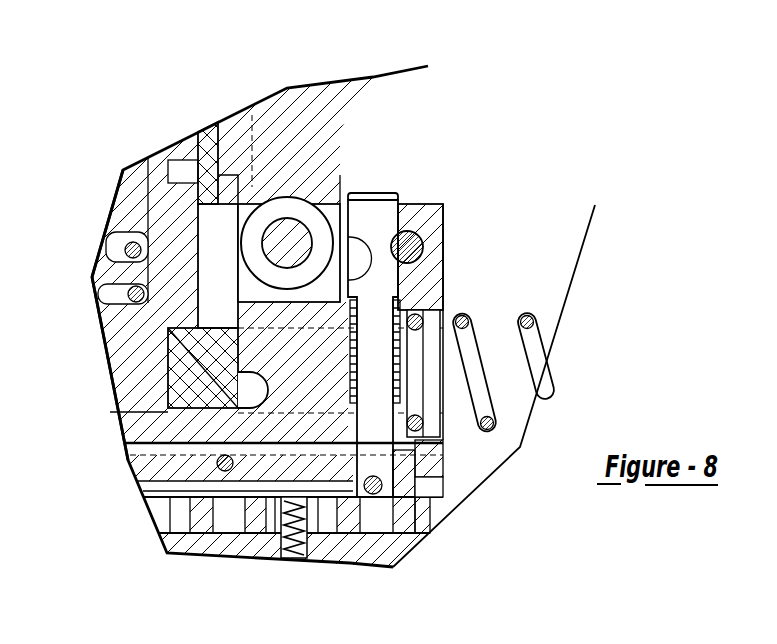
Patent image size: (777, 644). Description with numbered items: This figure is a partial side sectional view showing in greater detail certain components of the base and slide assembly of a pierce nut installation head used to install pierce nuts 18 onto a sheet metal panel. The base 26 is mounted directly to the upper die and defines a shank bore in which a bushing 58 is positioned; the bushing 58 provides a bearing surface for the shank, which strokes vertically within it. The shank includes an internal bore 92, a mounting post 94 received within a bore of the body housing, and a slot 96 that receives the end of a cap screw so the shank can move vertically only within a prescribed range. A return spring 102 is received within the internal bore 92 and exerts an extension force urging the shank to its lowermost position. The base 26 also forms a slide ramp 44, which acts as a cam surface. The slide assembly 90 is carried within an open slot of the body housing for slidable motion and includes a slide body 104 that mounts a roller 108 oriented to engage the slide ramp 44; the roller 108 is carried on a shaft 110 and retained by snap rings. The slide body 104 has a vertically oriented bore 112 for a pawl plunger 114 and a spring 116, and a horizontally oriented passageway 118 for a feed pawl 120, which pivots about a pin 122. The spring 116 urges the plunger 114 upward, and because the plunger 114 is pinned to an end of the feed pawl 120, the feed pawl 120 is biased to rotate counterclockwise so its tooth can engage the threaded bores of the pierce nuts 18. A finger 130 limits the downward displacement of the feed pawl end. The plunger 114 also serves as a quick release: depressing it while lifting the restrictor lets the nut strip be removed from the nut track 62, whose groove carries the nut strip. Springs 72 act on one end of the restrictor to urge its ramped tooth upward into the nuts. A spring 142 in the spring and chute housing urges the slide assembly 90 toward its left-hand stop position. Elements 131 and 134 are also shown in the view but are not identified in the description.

The pierce nuts 18 is at (207, 530).
The base 26 is at (373, 77).
The slide ramp 44 is at (338, 136).
The bushing 58 is at (210, 130).
The nut track 62 is at (373, 553).
The springs 72 is at (280, 545).
The slide assembly 90 is at (456, 448).
The internal bore 92 is at (136, 194).
The mounting post 94 is at (175, 364).
The slot 96 is at (190, 160).
The return spring 102 is at (128, 228).
The slide body 104 is at (323, 444).
The roller 108 is at (310, 196).
The shaft 110 is at (278, 218).
The vertically oriented bore 112 is at (390, 370).
The pawl plunger 114 is at (387, 194).
The spring 116 is at (397, 387).
The horizontally oriented passageway 118 is at (265, 432).
The feed pawl 120 is at (125, 444).
The pin 122 is at (165, 462).
The finger 130 is at (432, 492).
The bracket 131 is at (432, 460).
The fastener 134 is at (393, 277).
The spring 142 is at (472, 316).